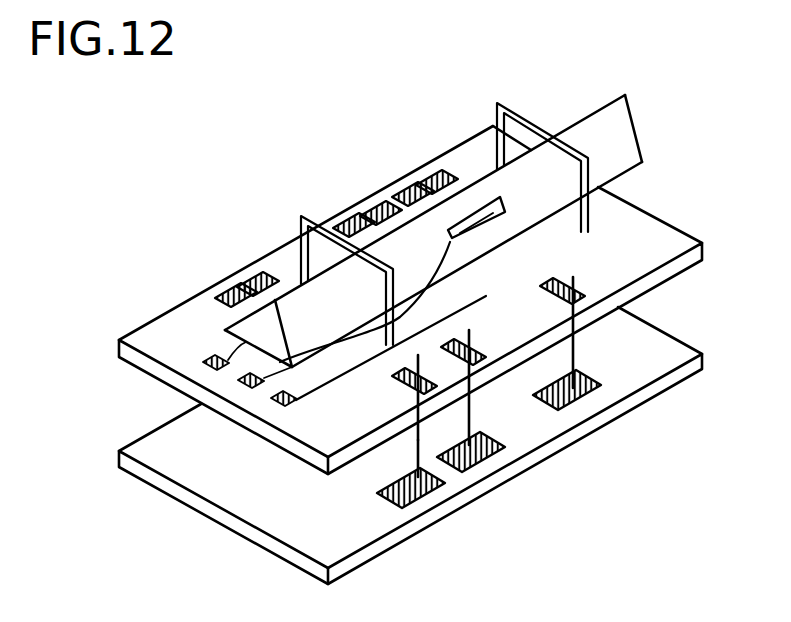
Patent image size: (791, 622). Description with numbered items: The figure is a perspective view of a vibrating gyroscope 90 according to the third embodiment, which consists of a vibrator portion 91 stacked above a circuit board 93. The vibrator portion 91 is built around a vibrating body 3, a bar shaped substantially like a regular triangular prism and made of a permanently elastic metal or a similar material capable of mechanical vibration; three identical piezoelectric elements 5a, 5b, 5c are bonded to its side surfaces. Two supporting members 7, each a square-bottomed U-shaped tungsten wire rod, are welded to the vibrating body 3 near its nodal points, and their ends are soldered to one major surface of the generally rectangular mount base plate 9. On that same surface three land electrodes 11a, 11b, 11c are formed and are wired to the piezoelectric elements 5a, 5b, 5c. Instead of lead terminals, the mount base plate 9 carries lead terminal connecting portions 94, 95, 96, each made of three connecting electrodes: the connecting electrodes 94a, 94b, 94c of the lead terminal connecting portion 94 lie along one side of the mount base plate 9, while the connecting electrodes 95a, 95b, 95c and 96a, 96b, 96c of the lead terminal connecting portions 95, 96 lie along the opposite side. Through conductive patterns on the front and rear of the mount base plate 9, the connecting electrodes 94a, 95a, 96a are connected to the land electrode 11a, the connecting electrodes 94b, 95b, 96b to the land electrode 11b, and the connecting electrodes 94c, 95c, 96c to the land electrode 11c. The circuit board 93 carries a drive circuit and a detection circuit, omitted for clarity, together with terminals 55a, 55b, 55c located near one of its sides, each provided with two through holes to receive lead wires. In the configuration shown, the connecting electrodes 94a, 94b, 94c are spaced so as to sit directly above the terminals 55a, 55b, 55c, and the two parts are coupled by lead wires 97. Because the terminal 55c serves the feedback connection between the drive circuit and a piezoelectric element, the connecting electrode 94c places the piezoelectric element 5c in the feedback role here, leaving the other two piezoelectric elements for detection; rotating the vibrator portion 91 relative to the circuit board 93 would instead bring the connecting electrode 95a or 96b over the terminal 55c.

The vibrating gyroscope 90 is at (375, 86).
The vibrator portion 91 is at (672, 175).
The mount base plate 9 is at (118, 339).
The circuit board 93 is at (118, 450).
The vibrating body 3 is at (603, 124).
The piezoelectric element 5a is at (471, 178).
The piezoelectric element 5b is at (494, 216).
The piezoelectric element 5c is at (556, 236).
The supporting member 7 is at (521, 104).
The lead terminal connecting portion 95 is at (323, 121).
The lead terminal connecting portion 96 is at (328, 196).
The connecting electrode 95a is at (233, 287).
The connecting electrode 95b is at (343, 215).
The connecting electrode 95c is at (418, 168).
The connecting electrode 96a is at (405, 183).
The connecting electrode 96b is at (256, 276).
The connecting electrode 96c is at (364, 207).
The land electrode 11a is at (205, 365).
The land electrode 11b is at (237, 390).
The land electrode 11c is at (280, 410).
The lead terminal connecting portion 94 is at (660, 485).
The connecting electrode 94a is at (421, 392).
The connecting electrode 94b is at (473, 348).
The connecting electrode 94c is at (578, 293).
The terminal 55a is at (400, 508).
The terminal 55b is at (462, 474).
The terminal 55c is at (610, 403).
The lead wire 97 is at (419, 453).